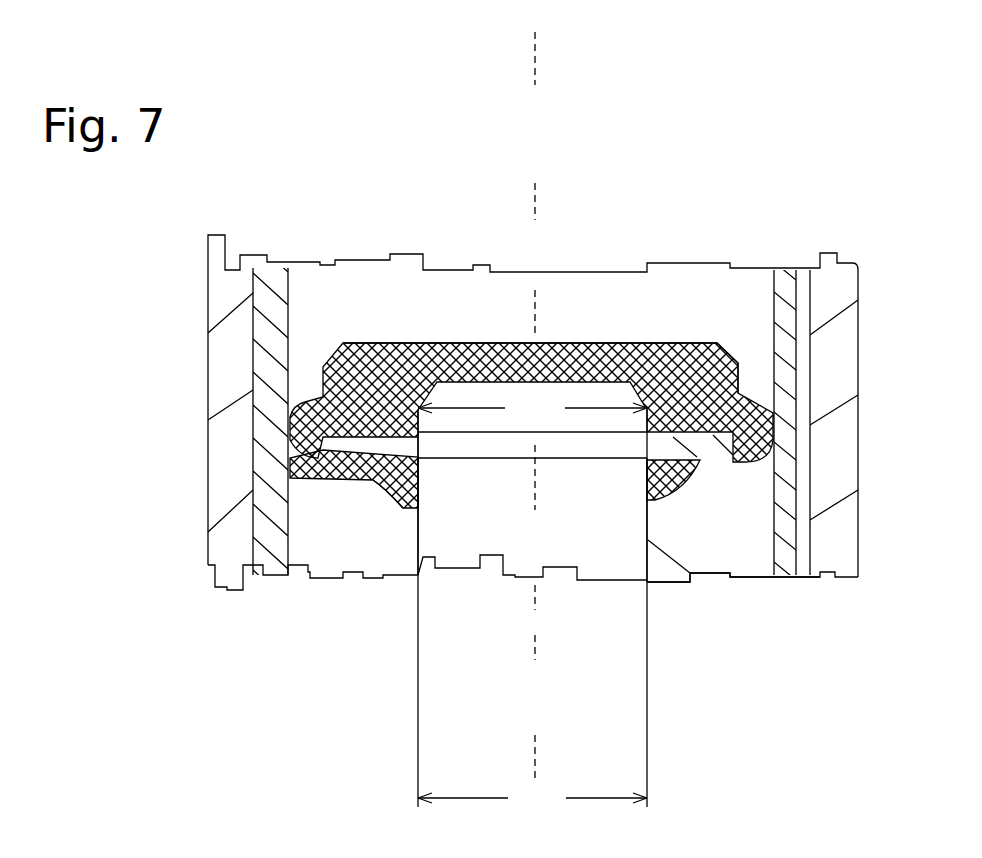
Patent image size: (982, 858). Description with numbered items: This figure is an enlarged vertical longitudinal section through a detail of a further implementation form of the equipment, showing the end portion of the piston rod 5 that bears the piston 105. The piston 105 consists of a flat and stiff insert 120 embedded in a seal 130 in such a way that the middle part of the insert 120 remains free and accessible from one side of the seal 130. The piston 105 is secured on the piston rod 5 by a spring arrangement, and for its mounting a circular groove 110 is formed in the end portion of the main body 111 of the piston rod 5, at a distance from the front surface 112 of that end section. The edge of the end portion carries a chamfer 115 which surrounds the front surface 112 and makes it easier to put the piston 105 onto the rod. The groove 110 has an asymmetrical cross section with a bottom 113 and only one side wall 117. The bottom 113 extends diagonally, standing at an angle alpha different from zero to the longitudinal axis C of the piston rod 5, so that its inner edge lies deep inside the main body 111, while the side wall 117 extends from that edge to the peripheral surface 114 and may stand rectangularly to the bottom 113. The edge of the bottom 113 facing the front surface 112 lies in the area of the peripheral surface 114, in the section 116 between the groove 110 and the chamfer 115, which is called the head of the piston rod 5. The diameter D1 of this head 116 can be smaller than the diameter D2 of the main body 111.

The piston 105 is at (319, 297).
The seal 130 is at (454, 338).
The circular groove 110 is at (395, 467).
The front surface 112 is at (608, 340).
The chamfer 115 is at (685, 337).
The head 116 is at (623, 430).
The insert 120 is at (636, 463).
The piston rod 5 is at (406, 530).
The groove bottom 113 is at (500, 443).
The groove side wall 117 is at (403, 508).
The peripheral surface 114 is at (645, 545).
The main body 111 is at (705, 588).
The longitudinal axis C is at (537, 330).
The diameter of the head D1 is at (532, 409).
The diameter of the main body D2 is at (532, 799).